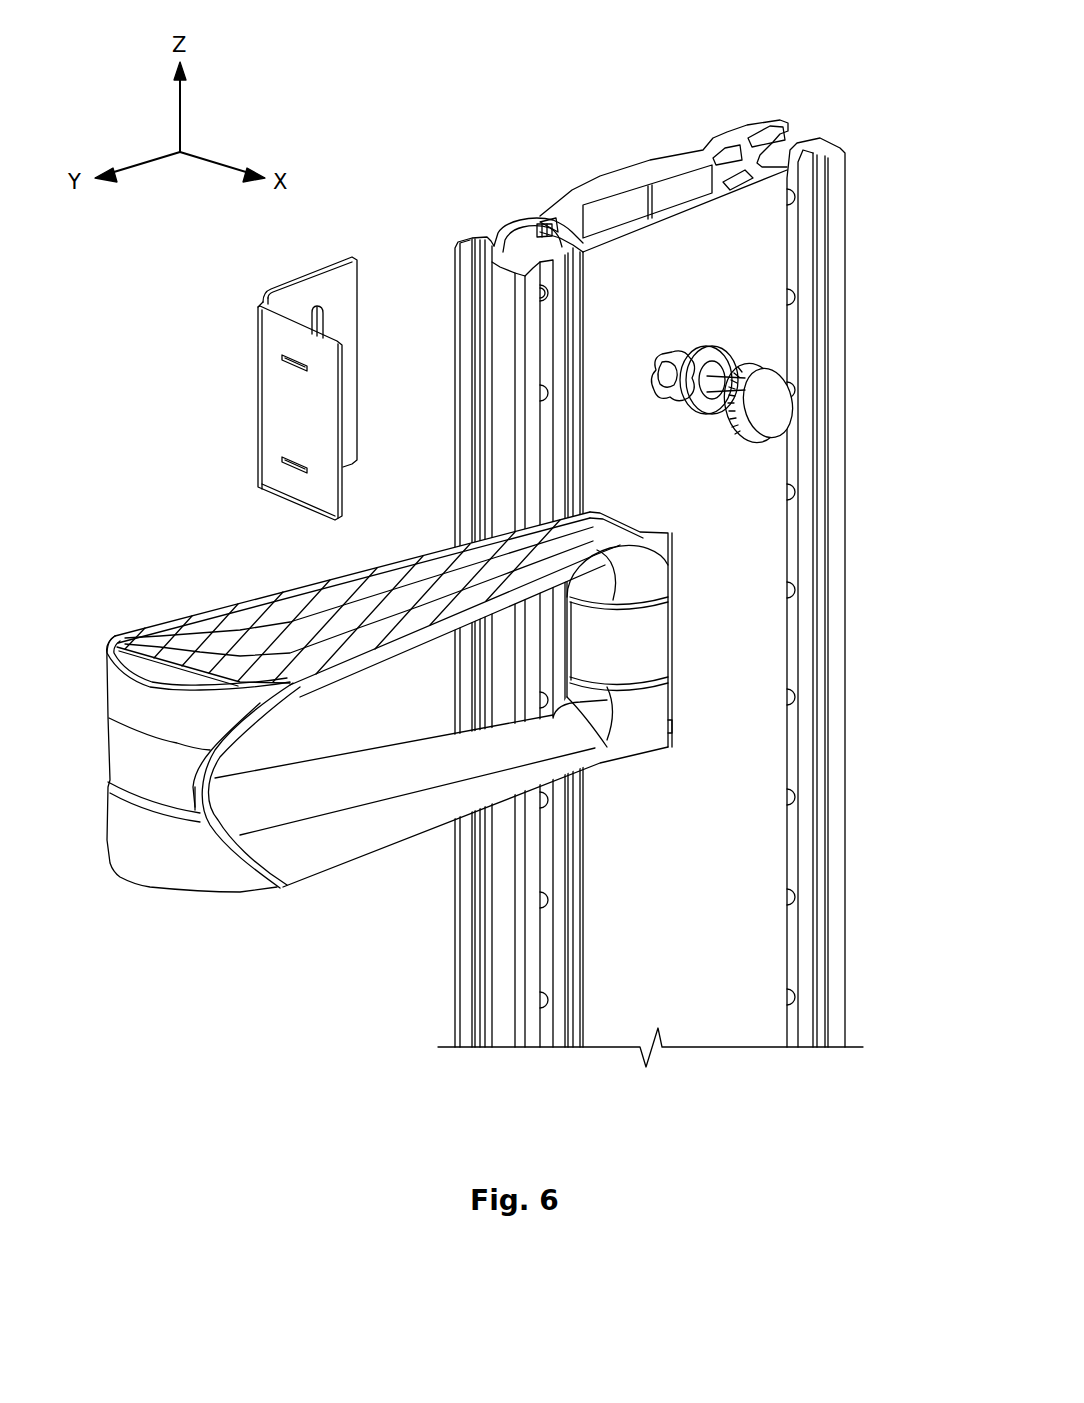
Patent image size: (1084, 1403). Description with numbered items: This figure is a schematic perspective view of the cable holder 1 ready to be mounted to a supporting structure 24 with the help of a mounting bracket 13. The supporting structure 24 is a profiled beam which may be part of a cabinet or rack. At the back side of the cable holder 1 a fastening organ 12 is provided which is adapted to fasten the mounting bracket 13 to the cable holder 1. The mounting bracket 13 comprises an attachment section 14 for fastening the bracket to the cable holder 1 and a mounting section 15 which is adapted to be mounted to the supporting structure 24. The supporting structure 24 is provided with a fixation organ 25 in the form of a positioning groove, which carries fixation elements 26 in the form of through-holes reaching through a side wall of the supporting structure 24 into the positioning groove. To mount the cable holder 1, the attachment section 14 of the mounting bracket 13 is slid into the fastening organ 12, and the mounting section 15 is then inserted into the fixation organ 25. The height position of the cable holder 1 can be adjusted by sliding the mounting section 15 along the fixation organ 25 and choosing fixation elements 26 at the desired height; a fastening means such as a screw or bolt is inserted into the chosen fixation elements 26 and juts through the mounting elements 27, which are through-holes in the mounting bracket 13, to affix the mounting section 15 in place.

The cable holder 1 is at (206, 586).
The fastening organ 12 is at (632, 520).
The mounting bracket 13 is at (288, 278).
The attachment section 14 is at (270, 402).
The mounting section 15 is at (347, 297).
The supporting structure 24 is at (847, 320).
The fixation organ 25 is at (493, 238).
The fixation elements 26 is at (546, 293).
The mounting elements 27 is at (322, 318).